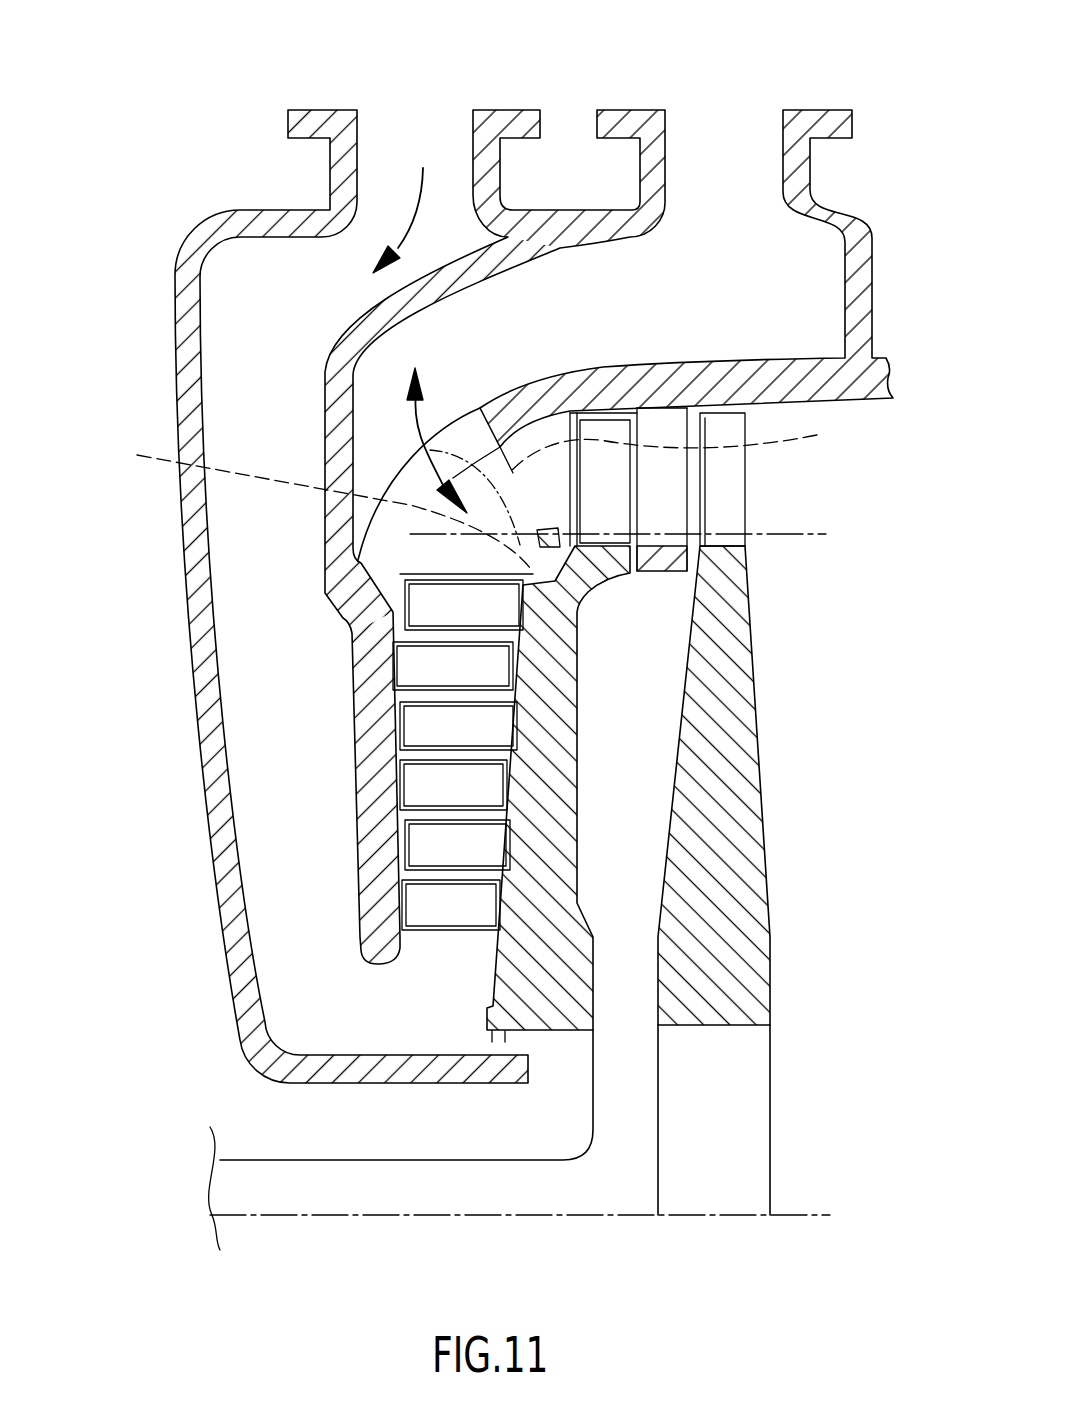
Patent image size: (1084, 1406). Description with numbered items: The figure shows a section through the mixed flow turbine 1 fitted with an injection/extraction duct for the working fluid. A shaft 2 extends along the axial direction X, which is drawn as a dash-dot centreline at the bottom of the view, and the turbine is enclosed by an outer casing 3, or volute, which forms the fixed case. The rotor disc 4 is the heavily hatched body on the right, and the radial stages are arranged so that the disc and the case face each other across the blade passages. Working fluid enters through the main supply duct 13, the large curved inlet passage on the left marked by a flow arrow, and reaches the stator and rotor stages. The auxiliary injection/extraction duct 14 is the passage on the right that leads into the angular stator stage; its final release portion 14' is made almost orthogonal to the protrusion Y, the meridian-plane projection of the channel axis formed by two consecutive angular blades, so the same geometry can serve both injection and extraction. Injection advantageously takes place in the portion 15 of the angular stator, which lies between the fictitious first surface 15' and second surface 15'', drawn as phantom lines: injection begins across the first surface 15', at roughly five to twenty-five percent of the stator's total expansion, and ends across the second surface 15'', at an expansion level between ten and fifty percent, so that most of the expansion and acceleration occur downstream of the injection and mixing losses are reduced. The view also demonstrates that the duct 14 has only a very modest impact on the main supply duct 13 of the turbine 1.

The mixed flow turbine 1 is at (120, 48).
The shaft 2 is at (261, 1185).
The outer casing 3 is at (357, 585).
The rotor disc 4 is at (553, 752).
The main supply duct 13 is at (283, 323).
The injection/extraction duct 14 is at (696, 340).
The final release portion 14' is at (286, 447).
The portion of the angular stator stage 15 is at (628, 669).
The first surface 15' is at (317, 501).
The second surface 15'' is at (683, 446).
The axial direction X is at (800, 1216).
The protrusion of meridian plan of the channel axis Y is at (627, 534).